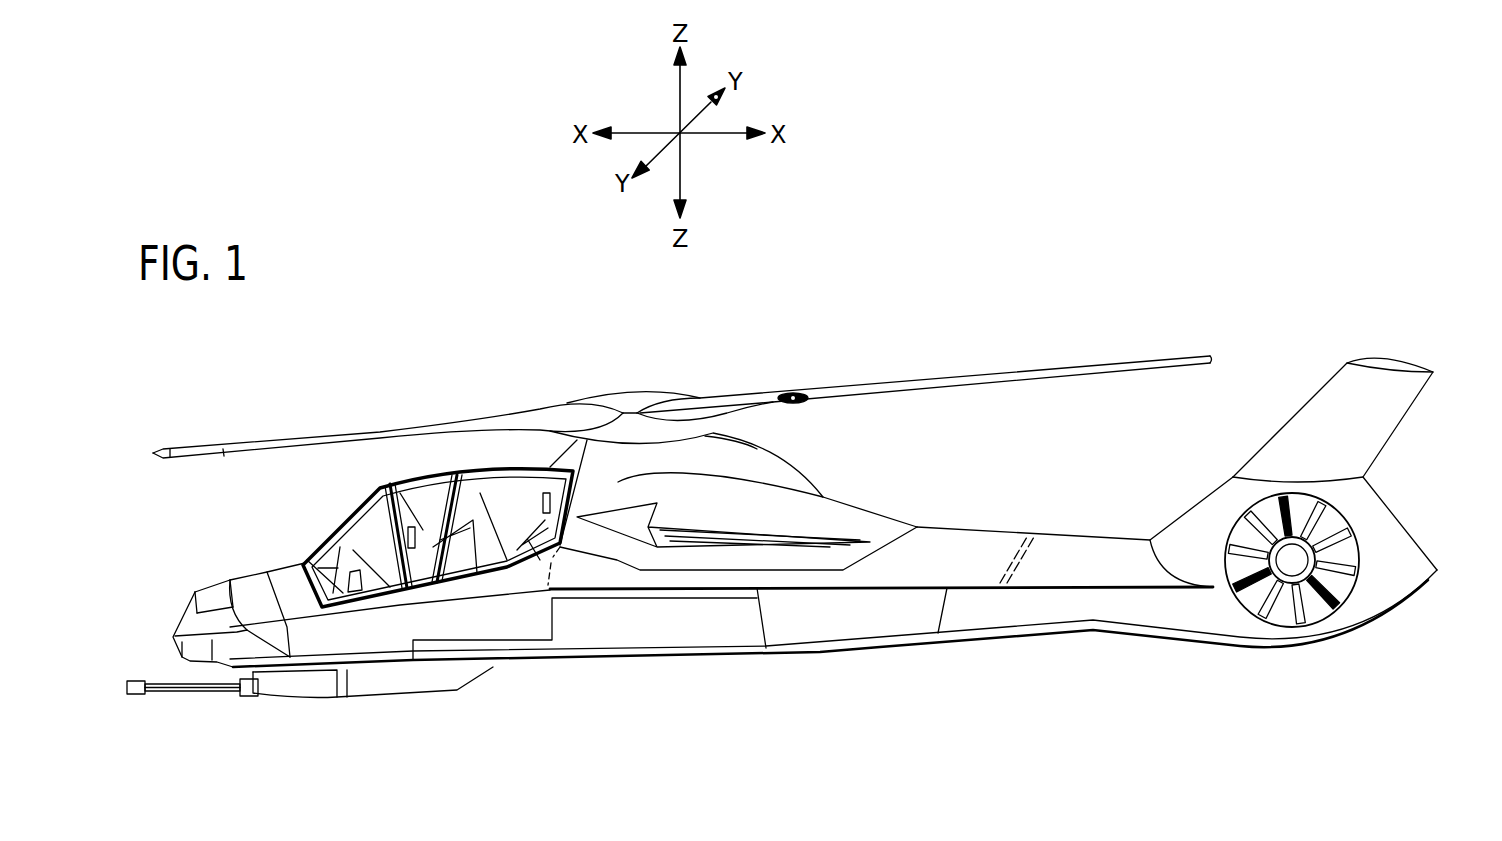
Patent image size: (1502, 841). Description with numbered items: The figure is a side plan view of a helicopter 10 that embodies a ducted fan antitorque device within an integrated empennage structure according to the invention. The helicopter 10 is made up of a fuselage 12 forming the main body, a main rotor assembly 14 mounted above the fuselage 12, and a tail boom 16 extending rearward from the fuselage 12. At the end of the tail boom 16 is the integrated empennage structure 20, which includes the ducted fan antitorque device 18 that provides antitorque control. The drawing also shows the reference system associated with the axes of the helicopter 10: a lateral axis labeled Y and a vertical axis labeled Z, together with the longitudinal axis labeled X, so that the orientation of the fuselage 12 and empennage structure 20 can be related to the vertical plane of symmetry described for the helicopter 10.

The helicopter 10 is at (350, 525).
The fuselage 12 is at (833, 612).
The main rotor assembly 14 is at (682, 384).
The tail boom 16 is at (1046, 521).
The ducted fan antitorque device 18 is at (1326, 613).
The integrated empennage structure 20 is at (1391, 475).